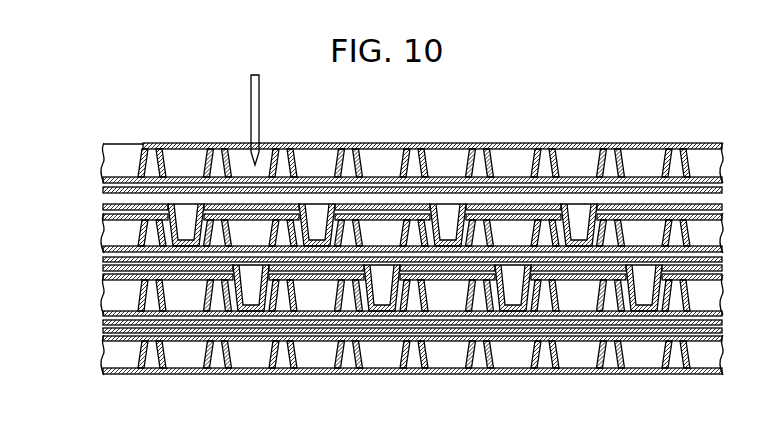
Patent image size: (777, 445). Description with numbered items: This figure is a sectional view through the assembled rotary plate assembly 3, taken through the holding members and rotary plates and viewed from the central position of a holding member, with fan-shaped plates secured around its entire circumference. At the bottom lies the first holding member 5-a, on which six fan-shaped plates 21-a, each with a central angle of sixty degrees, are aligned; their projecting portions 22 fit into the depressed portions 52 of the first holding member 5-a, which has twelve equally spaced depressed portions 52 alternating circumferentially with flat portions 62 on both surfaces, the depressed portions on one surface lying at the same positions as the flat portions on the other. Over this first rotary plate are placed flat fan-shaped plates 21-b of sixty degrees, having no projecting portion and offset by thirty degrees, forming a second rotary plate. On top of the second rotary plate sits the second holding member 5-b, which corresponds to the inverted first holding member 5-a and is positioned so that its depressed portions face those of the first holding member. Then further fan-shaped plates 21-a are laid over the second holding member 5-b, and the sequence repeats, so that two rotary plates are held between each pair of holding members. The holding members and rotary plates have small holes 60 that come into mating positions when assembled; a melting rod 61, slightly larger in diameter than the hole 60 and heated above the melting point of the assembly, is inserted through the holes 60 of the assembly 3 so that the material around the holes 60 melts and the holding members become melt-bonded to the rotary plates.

The rotary plate assembly 3 is at (82, 173).
The melting rod 61 is at (261, 90).
The small hole 60 is at (383, 156).
The flat fan-shaped plate 21-b is at (103, 257).
The fan-shaped plate 21-a is at (104, 266).
The second holding member 5-b is at (383, 345).
The first holding member 5-a is at (380, 376).
The projecting portion 22 is at (250, 284).
The flat portion 62 is at (636, 349).
The depressed portion 52 is at (715, 332).